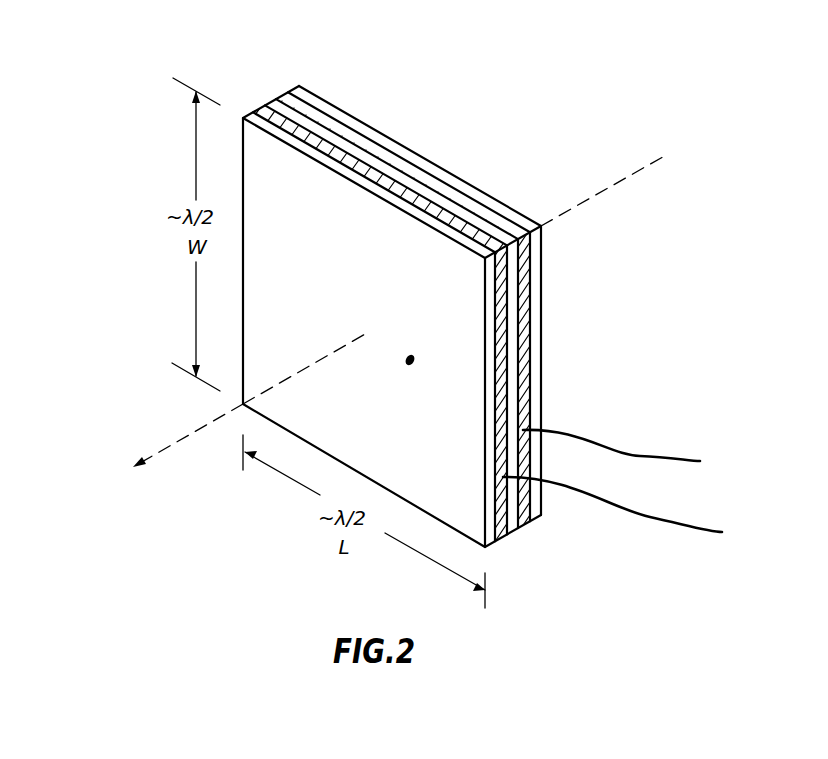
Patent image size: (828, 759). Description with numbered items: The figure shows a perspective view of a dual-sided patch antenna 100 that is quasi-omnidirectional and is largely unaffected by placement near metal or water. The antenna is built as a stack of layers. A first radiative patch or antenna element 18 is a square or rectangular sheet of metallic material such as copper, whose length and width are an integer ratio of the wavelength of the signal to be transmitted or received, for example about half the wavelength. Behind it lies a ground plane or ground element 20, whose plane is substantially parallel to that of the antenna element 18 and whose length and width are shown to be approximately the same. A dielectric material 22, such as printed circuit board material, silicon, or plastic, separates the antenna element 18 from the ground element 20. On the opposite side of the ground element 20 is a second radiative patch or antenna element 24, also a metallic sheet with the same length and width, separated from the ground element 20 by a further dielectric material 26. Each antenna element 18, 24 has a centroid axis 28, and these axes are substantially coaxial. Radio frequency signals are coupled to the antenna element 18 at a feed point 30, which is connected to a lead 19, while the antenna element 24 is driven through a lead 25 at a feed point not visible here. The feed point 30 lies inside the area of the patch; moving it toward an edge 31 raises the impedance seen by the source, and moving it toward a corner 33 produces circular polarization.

The dual-sided patch antenna 100 is at (554, 79).
The first radiative patch or antenna element 18 is at (318, 243).
The lead 19 is at (640, 512).
The ground plane or ground element 20 is at (273, 102).
The dielectric material 22 is at (257, 105).
The second radiative patch or antenna element 24 is at (530, 220).
The lead 25 is at (635, 452).
The dielectric material 26 is at (513, 220).
The centroid axis 28 is at (195, 427).
The feed point 30 is at (411, 357).
The edge 31 is at (485, 395).
The corner 33 is at (482, 543).